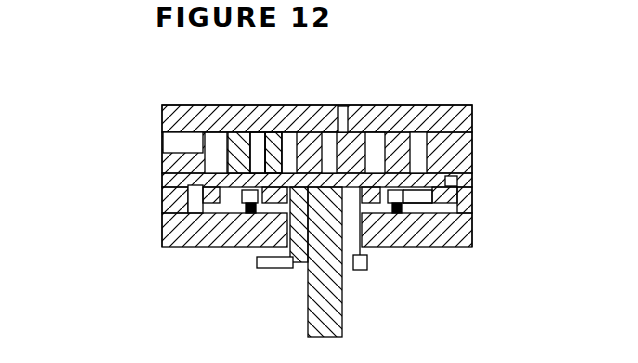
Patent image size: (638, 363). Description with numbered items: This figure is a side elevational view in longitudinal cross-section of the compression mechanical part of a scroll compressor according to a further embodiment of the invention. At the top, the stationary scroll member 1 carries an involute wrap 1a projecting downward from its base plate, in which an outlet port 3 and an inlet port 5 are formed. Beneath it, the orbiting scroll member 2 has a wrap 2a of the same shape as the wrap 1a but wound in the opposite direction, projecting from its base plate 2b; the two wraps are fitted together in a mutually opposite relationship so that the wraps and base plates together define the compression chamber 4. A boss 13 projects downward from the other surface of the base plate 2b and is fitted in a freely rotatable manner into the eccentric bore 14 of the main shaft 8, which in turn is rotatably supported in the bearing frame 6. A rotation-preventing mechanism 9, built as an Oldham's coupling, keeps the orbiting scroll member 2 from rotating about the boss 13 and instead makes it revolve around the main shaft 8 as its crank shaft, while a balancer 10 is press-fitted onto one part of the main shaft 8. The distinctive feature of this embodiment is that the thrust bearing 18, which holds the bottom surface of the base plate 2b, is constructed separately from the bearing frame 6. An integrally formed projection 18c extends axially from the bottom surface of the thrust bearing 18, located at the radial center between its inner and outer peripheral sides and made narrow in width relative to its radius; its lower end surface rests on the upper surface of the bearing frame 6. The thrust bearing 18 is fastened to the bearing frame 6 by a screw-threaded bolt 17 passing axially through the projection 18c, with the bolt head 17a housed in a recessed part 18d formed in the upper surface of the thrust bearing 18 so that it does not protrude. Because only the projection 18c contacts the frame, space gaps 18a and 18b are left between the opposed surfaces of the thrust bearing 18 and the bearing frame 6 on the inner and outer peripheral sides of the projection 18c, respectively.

The stationary scroll member 1 is at (214, 165).
The wrap 1a is at (254, 130).
The orbiting scroll member 2 is at (203, 104).
The wrap 2a is at (278, 148).
The base plate 2b is at (462, 178).
The outlet port 3 is at (340, 106).
The compression chamber 4 is at (420, 143).
The inlet port 5 is at (175, 142).
The bearing frame 6 is at (184, 237).
The main shaft 8 is at (320, 307).
The rotation-preventing mechanism 9 is at (208, 201).
The balancer 10 is at (278, 268).
The boss 13 is at (350, 270).
The eccentric bore 14 is at (305, 265).
The screw-threaded bolt 17 is at (252, 232).
The head 17a is at (395, 188).
The thrust bearing 18 is at (222, 237).
The space gap 18a is at (390, 208).
The space gap 18b is at (436, 214).
The projection 18c is at (414, 208).
The recessed part 18d is at (420, 202).